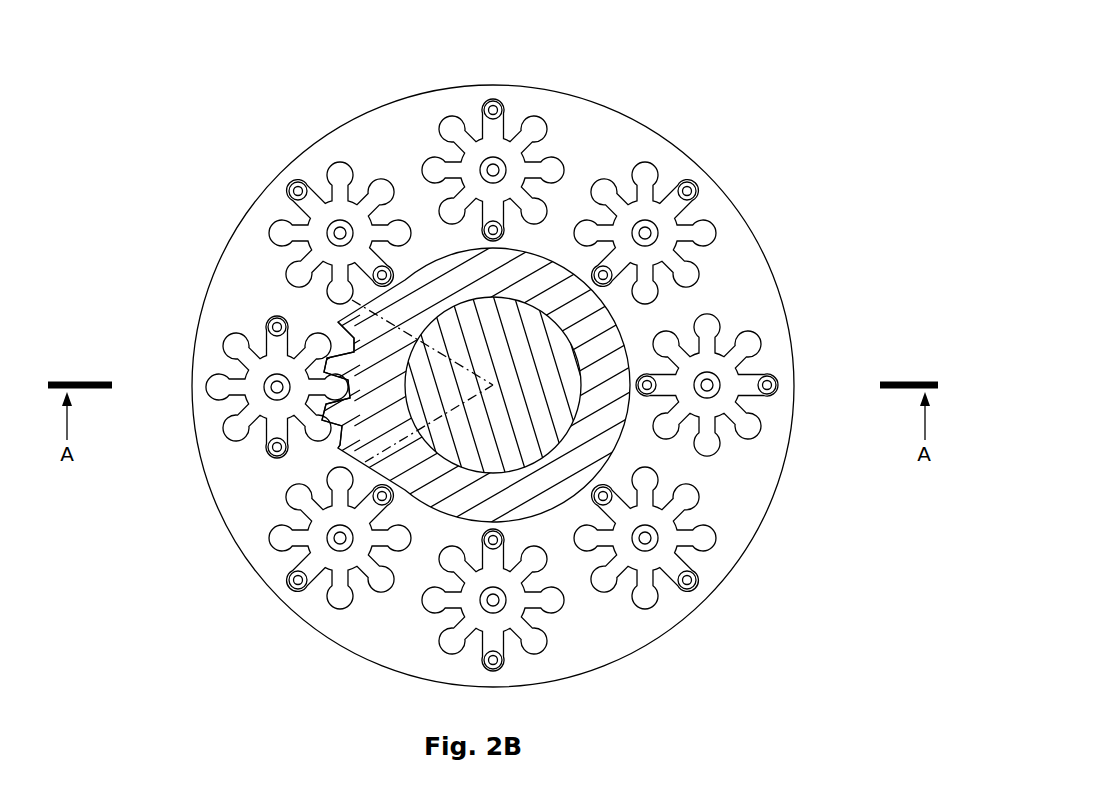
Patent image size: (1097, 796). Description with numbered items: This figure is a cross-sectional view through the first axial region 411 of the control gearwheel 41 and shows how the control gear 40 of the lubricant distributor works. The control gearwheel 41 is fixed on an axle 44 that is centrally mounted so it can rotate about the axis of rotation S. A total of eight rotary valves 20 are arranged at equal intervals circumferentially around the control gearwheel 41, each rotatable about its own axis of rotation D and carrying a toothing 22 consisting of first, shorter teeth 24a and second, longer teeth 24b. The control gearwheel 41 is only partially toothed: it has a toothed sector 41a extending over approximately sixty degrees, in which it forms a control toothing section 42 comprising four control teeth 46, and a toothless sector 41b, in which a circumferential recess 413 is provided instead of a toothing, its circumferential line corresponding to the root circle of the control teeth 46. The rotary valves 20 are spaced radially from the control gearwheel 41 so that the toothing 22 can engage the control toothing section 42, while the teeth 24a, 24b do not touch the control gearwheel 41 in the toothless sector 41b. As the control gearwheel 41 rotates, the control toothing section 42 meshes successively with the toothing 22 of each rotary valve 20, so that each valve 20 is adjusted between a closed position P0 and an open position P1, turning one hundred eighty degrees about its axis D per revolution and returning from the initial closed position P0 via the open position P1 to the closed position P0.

The control gear 40 is at (188, 150).
The rotary valve 20 is at (655, 205).
The toothing 22 is at (192, 400).
The first, shorter teeth 24a is at (357, 228).
The second, longer teeth 24b is at (290, 191).
The control gearwheel 41 is at (540, 395).
The toothed sector 41a is at (359, 417).
The toothless sector 41b is at (432, 288).
The first axial region 411 is at (428, 550).
The circumferential recess 413 is at (540, 250).
The control toothing section 42 is at (325, 435).
The axle 44 is at (560, 433).
The control teeth 46 is at (338, 322).
The closed position P0 is at (316, 155).
The open position P1 is at (210, 352).
The axis of rotation D is at (646, 233).
The axis of rotation S is at (493, 385).